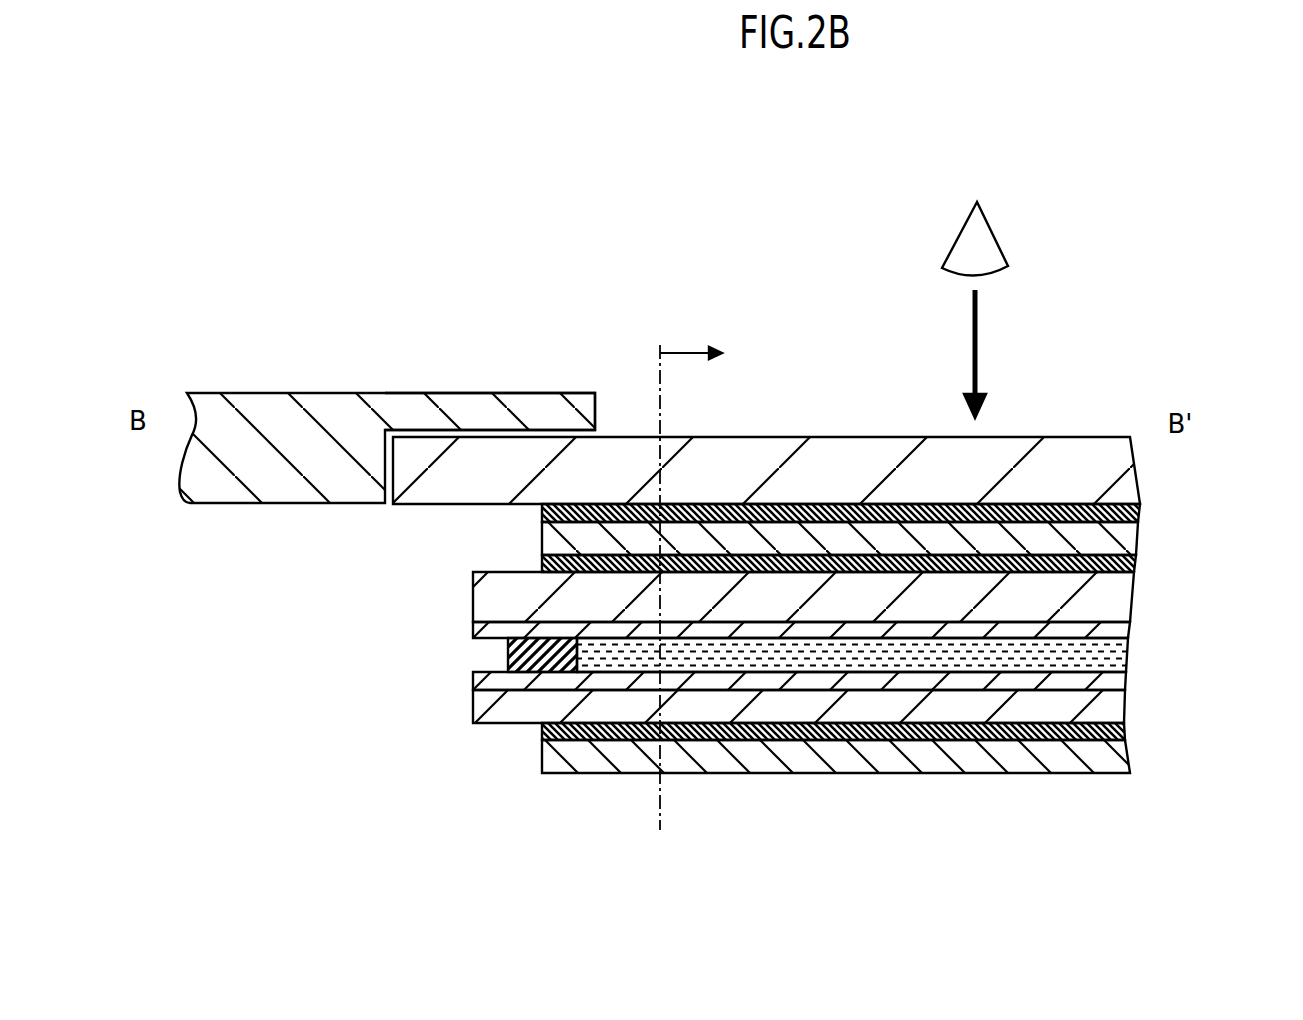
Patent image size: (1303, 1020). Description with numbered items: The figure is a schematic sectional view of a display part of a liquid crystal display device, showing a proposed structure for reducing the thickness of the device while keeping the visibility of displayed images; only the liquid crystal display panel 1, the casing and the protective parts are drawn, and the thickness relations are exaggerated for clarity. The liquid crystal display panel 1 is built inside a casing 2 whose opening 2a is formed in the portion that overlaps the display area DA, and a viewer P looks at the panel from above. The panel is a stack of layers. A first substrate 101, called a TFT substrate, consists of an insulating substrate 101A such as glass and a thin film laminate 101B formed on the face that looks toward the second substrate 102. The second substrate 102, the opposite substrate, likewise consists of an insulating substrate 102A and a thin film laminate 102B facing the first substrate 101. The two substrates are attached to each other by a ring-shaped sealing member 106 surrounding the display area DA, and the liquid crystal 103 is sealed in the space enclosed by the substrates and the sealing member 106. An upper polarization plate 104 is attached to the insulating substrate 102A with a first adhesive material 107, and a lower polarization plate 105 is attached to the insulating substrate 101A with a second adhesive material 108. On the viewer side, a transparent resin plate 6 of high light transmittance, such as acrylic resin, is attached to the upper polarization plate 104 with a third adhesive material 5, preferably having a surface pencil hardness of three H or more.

The liquid crystal display panel 1 is at (823, 515).
The casing 2 is at (308, 450).
The opening 2a is at (588, 410).
The third adhesive material 5 is at (1142, 508).
The resin plate 6 is at (789, 480).
The first substrate 101 is at (751, 774).
The insulating substrate 101A is at (858, 705).
The thin film laminate 101B is at (905, 680).
The second substrate 102 is at (755, 396).
The insulating substrate 102A is at (904, 608).
The thin film laminate 102B is at (858, 632).
The liquid crystal 103 is at (836, 766).
The upper polarization plate 104 is at (1027, 540).
The lower polarization plate 105 is at (748, 755).
The sealing member 106 is at (518, 642).
The first adhesive material 107 is at (1077, 552).
The second adhesive material 108 is at (588, 740).
The viewer P is at (987, 202).
The display area DA is at (691, 587).